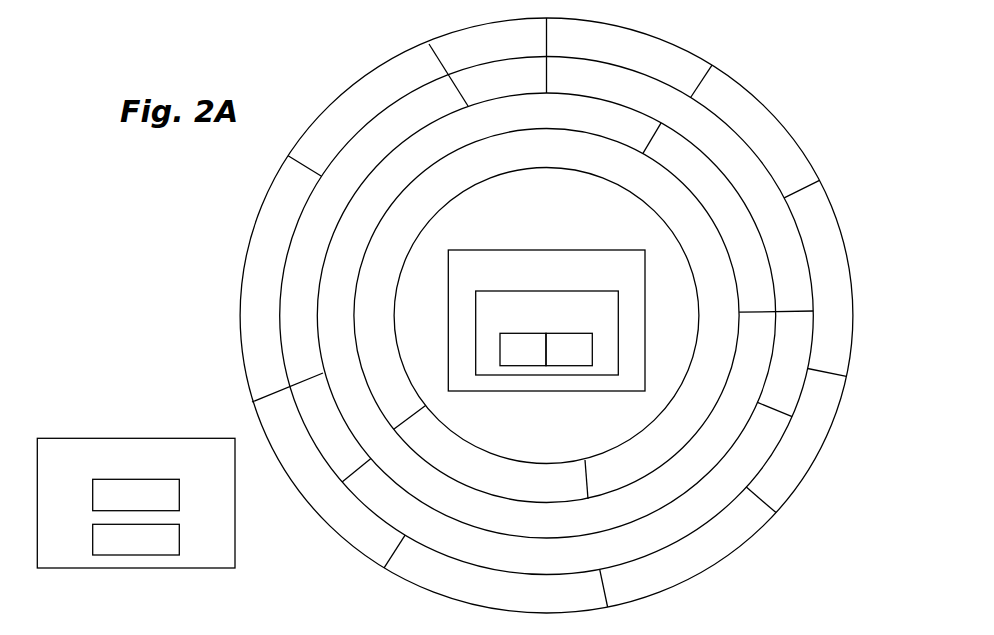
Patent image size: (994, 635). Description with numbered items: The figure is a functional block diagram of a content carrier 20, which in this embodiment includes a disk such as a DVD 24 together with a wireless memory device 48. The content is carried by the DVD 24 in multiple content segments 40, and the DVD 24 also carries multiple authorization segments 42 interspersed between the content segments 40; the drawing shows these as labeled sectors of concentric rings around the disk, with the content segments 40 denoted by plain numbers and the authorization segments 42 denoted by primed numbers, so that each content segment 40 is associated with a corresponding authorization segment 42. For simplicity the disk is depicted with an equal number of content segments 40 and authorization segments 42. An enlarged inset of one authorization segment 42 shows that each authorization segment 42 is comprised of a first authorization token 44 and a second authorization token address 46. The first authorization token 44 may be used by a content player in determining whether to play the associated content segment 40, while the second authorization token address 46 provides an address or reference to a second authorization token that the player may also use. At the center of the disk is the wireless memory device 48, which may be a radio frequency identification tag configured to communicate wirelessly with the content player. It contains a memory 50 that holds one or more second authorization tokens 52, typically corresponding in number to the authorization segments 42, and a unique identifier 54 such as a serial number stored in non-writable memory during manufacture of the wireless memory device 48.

The content carrier 20 is at (822, 87).
The DVD 24 is at (546, 316).
The content segments 40 is at (548, 312).
The authorization segments 42 is at (37, 438).
The first authorization token 44 is at (136, 494).
The second authorization token address 46 is at (136, 539).
The wireless memory device 48 is at (546, 320).
The memory 50 is at (547, 333).
The second authorization tokens 52 is at (523, 349).
The unique identifier 54 is at (569, 349).